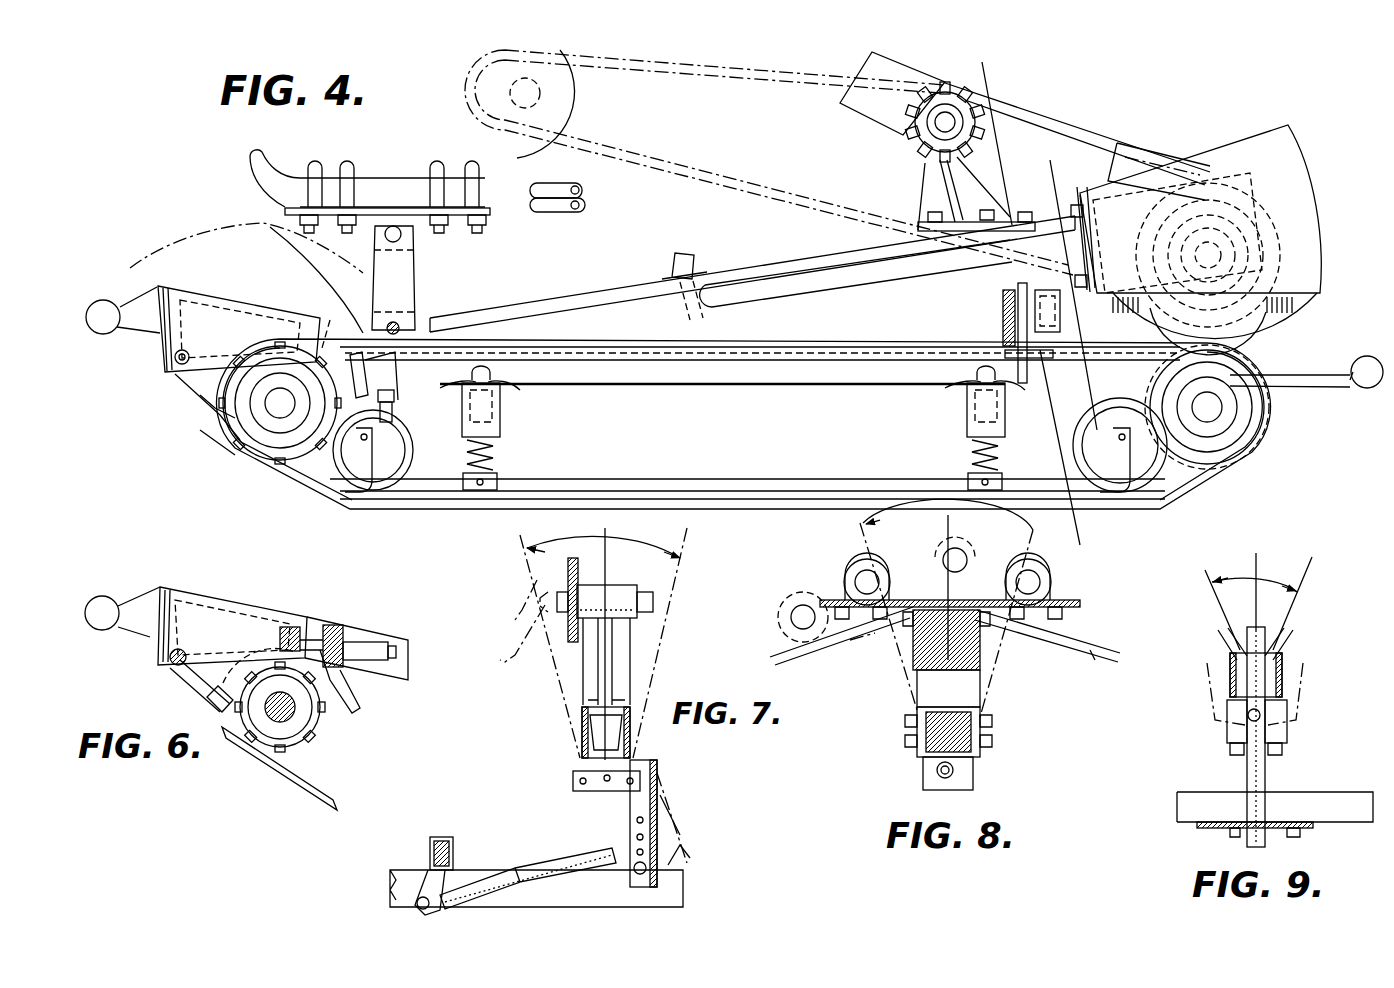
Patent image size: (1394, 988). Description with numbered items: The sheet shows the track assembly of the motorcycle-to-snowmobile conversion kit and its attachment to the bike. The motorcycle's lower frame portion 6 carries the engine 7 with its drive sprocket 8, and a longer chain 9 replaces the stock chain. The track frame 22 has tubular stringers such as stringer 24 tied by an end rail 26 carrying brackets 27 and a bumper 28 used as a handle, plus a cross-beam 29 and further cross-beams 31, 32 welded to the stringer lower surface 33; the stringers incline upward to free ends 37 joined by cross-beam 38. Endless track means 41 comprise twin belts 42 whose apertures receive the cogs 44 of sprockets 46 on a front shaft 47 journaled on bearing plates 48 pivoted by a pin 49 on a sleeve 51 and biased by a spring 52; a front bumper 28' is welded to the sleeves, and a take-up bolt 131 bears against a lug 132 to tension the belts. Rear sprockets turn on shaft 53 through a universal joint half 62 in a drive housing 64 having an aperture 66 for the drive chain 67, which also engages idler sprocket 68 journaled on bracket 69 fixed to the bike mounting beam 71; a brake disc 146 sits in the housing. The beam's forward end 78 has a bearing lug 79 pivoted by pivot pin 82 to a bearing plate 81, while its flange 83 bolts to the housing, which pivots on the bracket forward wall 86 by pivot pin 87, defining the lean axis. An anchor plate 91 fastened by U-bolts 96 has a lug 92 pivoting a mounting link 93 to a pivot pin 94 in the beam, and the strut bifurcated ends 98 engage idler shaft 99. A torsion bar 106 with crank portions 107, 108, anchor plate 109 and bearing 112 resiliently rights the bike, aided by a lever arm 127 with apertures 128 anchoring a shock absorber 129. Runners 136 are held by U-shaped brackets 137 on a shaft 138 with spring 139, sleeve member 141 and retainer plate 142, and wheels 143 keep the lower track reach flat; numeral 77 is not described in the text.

In FIG. 4, the lower frame portion 6 is at (557, 198).
In FIG. 8, the lower frame portion 6 is at (843, 586).
In FIG. 4, the engine 7 is at (968, 77).
In FIG. 4, the drive sprocket 8 is at (392, 200).
In FIG. 4, the chain 9 is at (1066, 168).
In FIG. 4, the track frame 22 is at (722, 390).
In FIG. 4, the stringer 24 is at (815, 386).
In FIG. 7, the stringer 24 is at (436, 837).
In FIG. 4, the end rail 26 is at (1288, 387).
In FIG. 4, the brackets 27 is at (1352, 388).
In FIG. 4, the bumper 28 is at (1372, 393).
In FIG. 4, the bumper 28' is at (118, 333).
In FIG. 6, the bumper 28' is at (119, 593).
In FIG. 4, the cross-beam 29 is at (1120, 456).
In FIG. 9, the cross-beam 29 is at (1319, 801).
In FIG. 4, the cross-beam 31 is at (970, 402).
In FIG. 7, the cross-beam 31 is at (683, 889).
In FIG. 4, the cross-beam 32 is at (500, 406).
In FIG. 4, the lower surface 33 is at (622, 386).
In FIG. 4, the free ends 37 is at (251, 318).
In FIG. 4, the cross-beam 38 is at (331, 318).
In FIG. 6, the cross-beam 38 is at (335, 625).
In FIG. 4, the endless track means 41 is at (1226, 488).
In FIG. 4, the endless belts 42 is at (431, 510).
In FIG. 4, the cogs 44 is at (237, 456).
In FIG. 6, the cogs 44 is at (318, 745).
In FIG. 4, the sprockets 46 is at (1262, 430).
In FIG. 4, the shaft 47 is at (277, 412).
In FIG. 6, the shaft 47 is at (294, 718).
In FIG. 4, the bearing plates 48 is at (212, 402).
In FIG. 6, the bearing plates 48 is at (266, 736).
In FIG. 4, the pin 49 is at (178, 366).
In FIG. 6, the pin 49 is at (170, 664).
In FIG. 4, the sleeve 51 is at (262, 300).
In FIG. 6, the sleeve 51 is at (212, 616).
In FIG. 6, the spring 52 is at (196, 701).
In FIG. 4, the shaft 53 is at (1222, 410).
In FIG. 4, the universal joint half 62 is at (1292, 244).
In FIG. 4, the drive housing 64 is at (1238, 142).
In FIG. 4, the aperture 66 is at (1141, 149).
In FIG. 4, the drive chain 67 is at (632, 158).
In FIG. 4, the idler sprocket 68 is at (915, 132).
In FIG. 7, the idler sprocket 68 is at (500, 610).
In FIG. 4, the bracket 69 is at (926, 188).
In FIG. 7, the bracket 69 is at (585, 681).
In FIG. 4, the bike mounting beam 71 is at (834, 255).
In FIG. 7, the bike mounting beam 71 is at (580, 737).
In FIG. 8, the bike mounting beam 71 is at (931, 763).
In FIG. 9, the bike mounting beam 71 is at (1230, 691).
In FIG. 4, the belt 77 is at (1262, 310).
In FIG. 4, the forward end 78 is at (482, 336).
In FIG. 4, the bearing lug 79 is at (388, 420).
In FIG. 8, the bearing lug 79 is at (973, 781).
In FIG. 4, the bearing plate 81 is at (343, 453).
In FIG. 6, the bearing plate 81 is at (356, 711).
In FIG. 4, the pivot pin 82 is at (398, 412).
In FIG. 8, the pivot pin 82 is at (955, 769).
In FIG. 4, the flange 83 is at (1080, 190).
In FIG. 7, the flange 83 is at (573, 782).
In FIG. 4, the forward wall 86 is at (1166, 306).
In FIG. 4, the pivot pin 87 is at (1110, 224).
In FIG. 4, the anchor plate 91 is at (503, 215).
In FIG. 8, the anchor plate 91 is at (1082, 607).
In FIG. 4, the lug 92 is at (412, 234).
In FIG. 6, the lug 92 is at (314, 791).
In FIG. 8, the lug 92 is at (920, 642).
In FIG. 4, the mounting link 93 is at (416, 282).
In FIG. 8, the mounting link 93 is at (897, 698).
In FIG. 4, the pivot pin 94 is at (402, 328).
In FIG. 8, the pivot pin 94 is at (994, 741).
In FIG. 4, the U-bolts 96 is at (478, 166).
In FIG. 8, the U-bolts 96 is at (851, 566).
In FIG. 4, the bifurcated ends 98 is at (866, 108).
In FIG. 4, the idler shaft 99 is at (940, 126).
In FIG. 7, the idler shaft 99 is at (652, 603).
In FIG. 4, the torsion bar 106 is at (937, 308).
In FIG. 9, the torsion bar 106 is at (1228, 728).
In FIG. 4, the crank portion 107 is at (690, 262).
In FIG. 9, the crank portion 107 is at (1266, 632).
In FIG. 4, the crank portion 108 is at (1016, 354).
In FIG. 9, the crank portion 108 is at (1247, 841).
In FIG. 4, the anchor plate 109 is at (1010, 340).
In FIG. 9, the anchor plate 109 is at (1308, 829).
In FIG. 4, the bearing 112 is at (1045, 290).
In FIG. 9, the bearing 112 is at (1288, 723).
In FIG. 4, the lever arm 127 is at (1003, 330).
In FIG. 7, the lever arm 127 is at (658, 796).
In FIG. 7, the apertures 128 is at (645, 820).
In FIG. 7, the shock absorber 129 is at (598, 890).
In FIG. 6, the take-up bolt 131 is at (372, 642).
In FIG. 6, the lug 132 is at (290, 627).
In FIG. 4, the runner 136 is at (800, 490).
In FIG. 4, the U-shaped brackets 137 is at (1004, 480).
In FIG. 4, the shaft 138 is at (978, 471).
In FIG. 4, the spring 139 is at (975, 456).
In FIG. 4, the sleeve member 141 is at (966, 426).
In FIG. 4, the retainer plate 142 is at (958, 385).
In FIG. 4, the wheels 143 is at (332, 490).
In FIG. 4, the brake disc 146 is at (1272, 322).